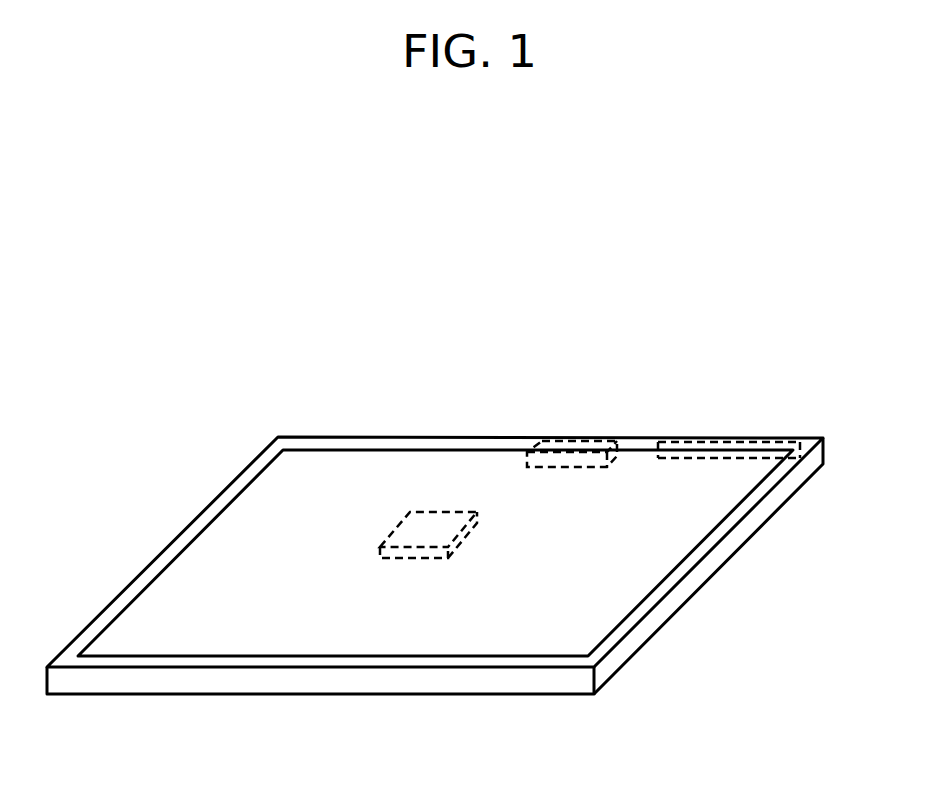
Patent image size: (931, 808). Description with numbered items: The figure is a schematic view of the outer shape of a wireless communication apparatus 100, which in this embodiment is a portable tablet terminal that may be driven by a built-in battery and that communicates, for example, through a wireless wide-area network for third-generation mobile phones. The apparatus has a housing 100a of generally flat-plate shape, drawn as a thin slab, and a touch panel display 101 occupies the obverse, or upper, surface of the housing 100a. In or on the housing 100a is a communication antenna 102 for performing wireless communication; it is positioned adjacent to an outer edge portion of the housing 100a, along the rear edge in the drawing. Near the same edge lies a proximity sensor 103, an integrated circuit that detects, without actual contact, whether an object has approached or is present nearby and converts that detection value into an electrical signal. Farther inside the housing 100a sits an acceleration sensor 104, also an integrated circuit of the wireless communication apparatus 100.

The wireless communication apparatus 100 is at (482, 340).
The housing 100a is at (712, 563).
The touch panel display 101 is at (255, 538).
The communication antenna 102 is at (728, 441).
The proximity sensor 103 is at (578, 441).
The acceleration sensor 104 is at (435, 512).